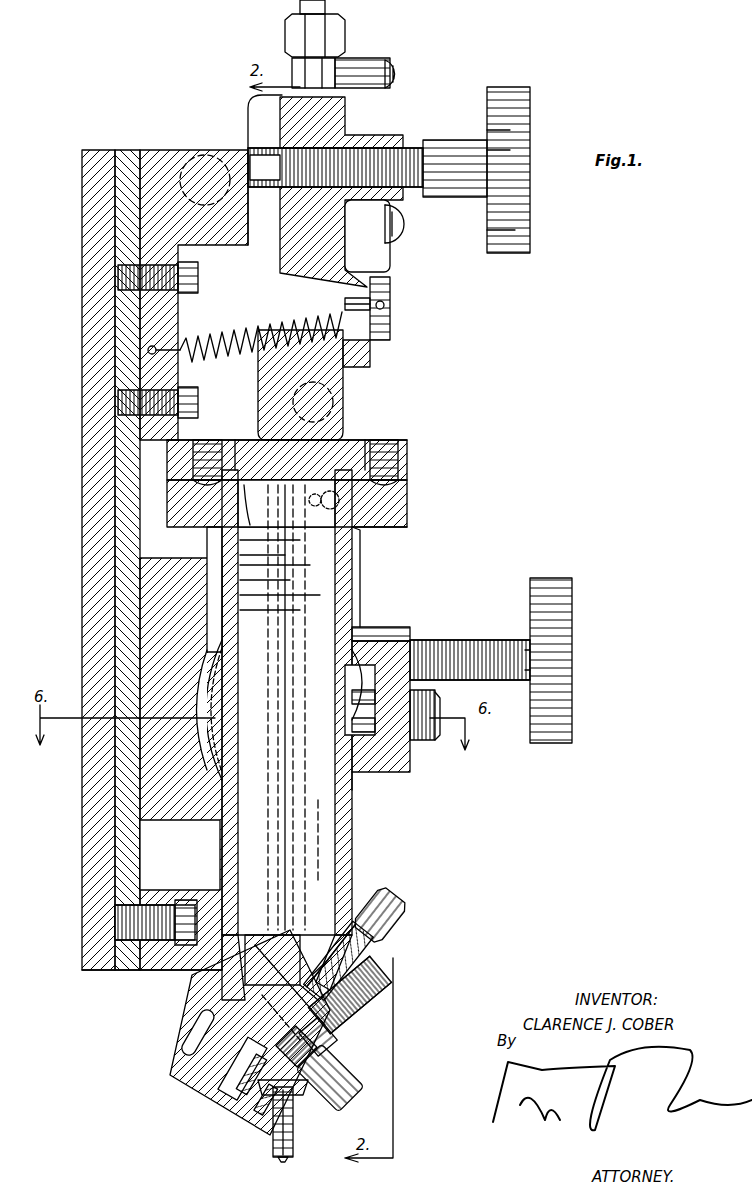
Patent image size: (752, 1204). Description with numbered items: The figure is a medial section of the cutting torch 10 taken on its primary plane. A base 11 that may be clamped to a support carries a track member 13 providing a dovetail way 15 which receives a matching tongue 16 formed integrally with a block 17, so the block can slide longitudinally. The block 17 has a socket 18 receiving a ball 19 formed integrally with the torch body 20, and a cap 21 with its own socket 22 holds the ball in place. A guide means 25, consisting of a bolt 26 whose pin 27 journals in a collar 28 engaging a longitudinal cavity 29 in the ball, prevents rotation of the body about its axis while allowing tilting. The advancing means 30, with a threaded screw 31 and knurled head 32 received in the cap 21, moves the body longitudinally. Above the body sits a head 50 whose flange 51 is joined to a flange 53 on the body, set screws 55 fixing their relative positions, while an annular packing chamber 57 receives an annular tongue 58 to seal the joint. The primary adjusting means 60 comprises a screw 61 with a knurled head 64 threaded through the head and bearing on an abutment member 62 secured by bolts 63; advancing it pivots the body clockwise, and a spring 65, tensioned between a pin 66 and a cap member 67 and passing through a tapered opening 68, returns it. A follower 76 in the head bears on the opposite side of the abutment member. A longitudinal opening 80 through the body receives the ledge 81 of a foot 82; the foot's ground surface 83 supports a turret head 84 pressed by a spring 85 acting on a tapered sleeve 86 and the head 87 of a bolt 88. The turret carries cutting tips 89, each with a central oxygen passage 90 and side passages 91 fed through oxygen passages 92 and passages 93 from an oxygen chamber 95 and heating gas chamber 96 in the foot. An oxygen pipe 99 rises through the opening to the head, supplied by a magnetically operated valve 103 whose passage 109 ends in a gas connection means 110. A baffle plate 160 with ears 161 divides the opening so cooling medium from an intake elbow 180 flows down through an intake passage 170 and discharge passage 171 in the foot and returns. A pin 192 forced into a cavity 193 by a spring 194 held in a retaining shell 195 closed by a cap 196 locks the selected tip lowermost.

The cutting torch 10 is at (454, 434).
The base 11 is at (95, 528).
The track member 13 is at (128, 560).
The way 15 is at (150, 860).
The tongue 16 is at (150, 786).
The block 17 is at (162, 763).
The socket 18 is at (205, 735).
The ball 19 is at (200, 690).
The body 20 is at (345, 600).
The cap 21 is at (395, 772).
The socket 22 is at (360, 778).
The guide means 25 is at (438, 738).
The bolt 26 is at (420, 710).
The pin 27 is at (350, 695).
The collar 28 is at (352, 730).
The longitudinal cavity 29 is at (360, 650).
The advancing means 30 is at (597, 645).
The threaded screw 31 is at (488, 640).
The knurled head 32 is at (550, 660).
The head 50 is at (348, 380).
The flange 51 is at (410, 448).
The flange 53 is at (410, 496).
The set screws 55 is at (208, 440).
The annular packing chamber 57 is at (363, 440).
The annular tongue 58 is at (352, 510).
The primary adjusting means 60 is at (558, 110).
The screw 61 is at (405, 160).
The abutment member 62 is at (163, 170).
The bolts 63 is at (190, 285).
The knurled head 64 is at (512, 215).
The spring 65 is at (222, 330).
The pin 66 is at (148, 350).
The cap member 67 is at (392, 300).
The tapered opening 68 is at (372, 290).
The follower 76 is at (203, 150).
The opening 80 is at (328, 568).
The ledge 81 is at (345, 905).
The foot 82 is at (182, 1040).
The ground surface 83 is at (262, 1092).
The turret head 84 is at (365, 1025).
The spring 85 is at (338, 1040).
The tapered sleeve 86 is at (282, 1025).
The head 87 is at (352, 1075).
The bolt 88 is at (330, 1095).
The cutting tips 89 is at (380, 1000).
The central oxygen passage 90 is at (288, 1157).
The side passages 91 is at (275, 1130).
The oxygen passages 92 is at (245, 1093).
The passages 93 is at (258, 1108).
The oxygen chamber 95 is at (205, 1078).
The heating gas chamber 96 is at (225, 1095).
The oxygen pipe 99 is at (350, 826).
The magnetically operated valve 103 is at (335, 395).
The passage 109 is at (360, 118).
The gas connection means 110 is at (320, 40).
The baffle plate 160 is at (372, 620).
The ears 161 is at (259, 505).
The intake passage 170 is at (312, 960).
The discharge passage 171 is at (190, 905).
The intake elbow 180 is at (425, 536).
The pin 192 is at (330, 968).
The cavity 193 is at (320, 998).
The spring 194 is at (372, 945).
The retaining shell 195 is at (385, 930).
The cap 196 is at (395, 905).